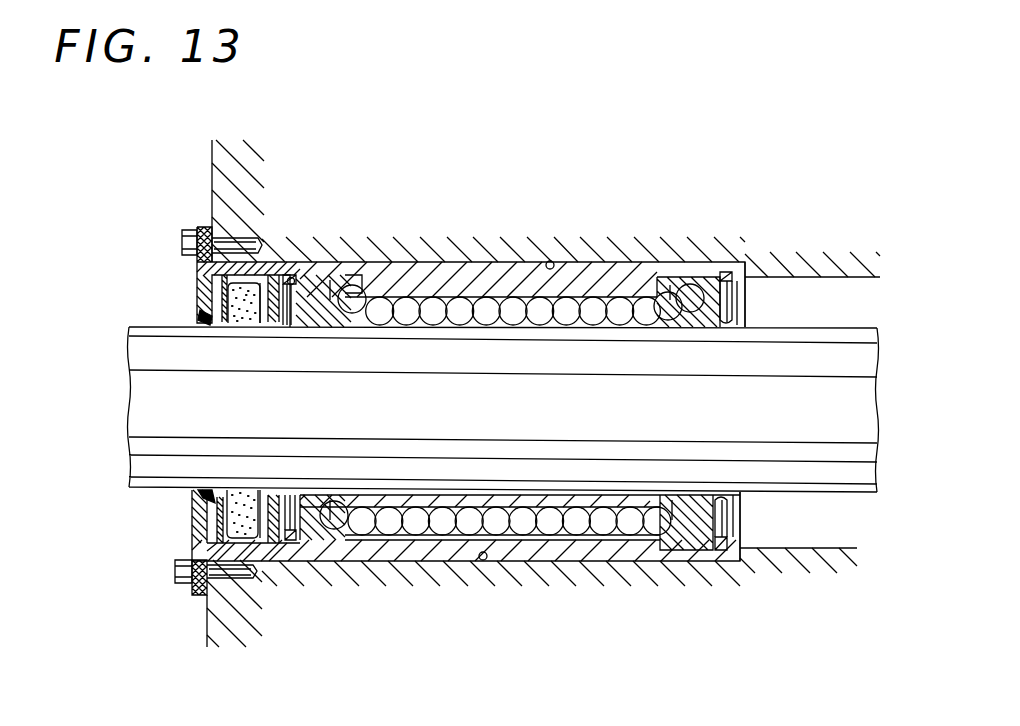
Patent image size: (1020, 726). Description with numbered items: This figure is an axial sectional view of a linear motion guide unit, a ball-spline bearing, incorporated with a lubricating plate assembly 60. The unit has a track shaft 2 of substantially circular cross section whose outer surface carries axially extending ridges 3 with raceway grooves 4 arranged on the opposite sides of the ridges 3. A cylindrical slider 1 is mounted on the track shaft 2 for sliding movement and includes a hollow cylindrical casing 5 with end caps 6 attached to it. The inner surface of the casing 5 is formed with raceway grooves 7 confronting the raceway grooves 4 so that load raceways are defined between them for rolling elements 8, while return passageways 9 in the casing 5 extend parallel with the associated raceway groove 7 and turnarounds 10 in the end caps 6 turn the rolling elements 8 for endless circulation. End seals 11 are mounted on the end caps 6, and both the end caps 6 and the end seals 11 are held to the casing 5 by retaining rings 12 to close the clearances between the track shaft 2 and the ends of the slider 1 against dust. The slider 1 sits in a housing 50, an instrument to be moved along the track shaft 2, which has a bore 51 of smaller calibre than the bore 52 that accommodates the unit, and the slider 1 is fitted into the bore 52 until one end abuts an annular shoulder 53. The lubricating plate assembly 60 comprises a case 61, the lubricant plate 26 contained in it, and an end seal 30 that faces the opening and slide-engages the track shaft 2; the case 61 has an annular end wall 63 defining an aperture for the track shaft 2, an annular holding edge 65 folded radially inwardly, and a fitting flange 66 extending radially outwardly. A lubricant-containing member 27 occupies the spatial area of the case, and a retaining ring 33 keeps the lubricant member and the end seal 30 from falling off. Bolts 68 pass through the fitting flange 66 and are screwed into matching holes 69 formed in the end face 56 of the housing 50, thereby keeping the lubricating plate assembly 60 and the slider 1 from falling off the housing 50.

The slider 1 is at (578, 263).
The track shaft 2 is at (518, 392).
The ridges 3 is at (842, 327).
The raceway grooves 4 is at (847, 370).
The casing 5 is at (445, 557).
The end caps 6 is at (314, 288).
The raceway grooves 7 is at (445, 290).
The rolling elements 8 is at (490, 305).
The return passageways 9 is at (573, 545).
The turnarounds 10 is at (335, 280).
The end seals 11 is at (296, 326).
The retaining rings 12 is at (292, 276).
The lubricant plate 26 is at (242, 322).
The lubricant-containing member 27 is at (243, 505).
The end seal 30 is at (204, 318).
The retaining ring 33 is at (212, 303).
The housing 50 is at (805, 262).
The bore 51 is at (818, 560).
The bore 52 is at (549, 261).
The annular shoulder 53 is at (748, 266).
The end face 56 is at (212, 162).
The lubricating plate assembly 60 is at (260, 264).
The case 61 is at (274, 278).
The annular end wall 63 is at (265, 302).
The annular holding edge 65 is at (222, 292).
The fitting flange 66 is at (200, 232).
The bolts 68 is at (185, 240).
The matching holes 69 is at (240, 240).